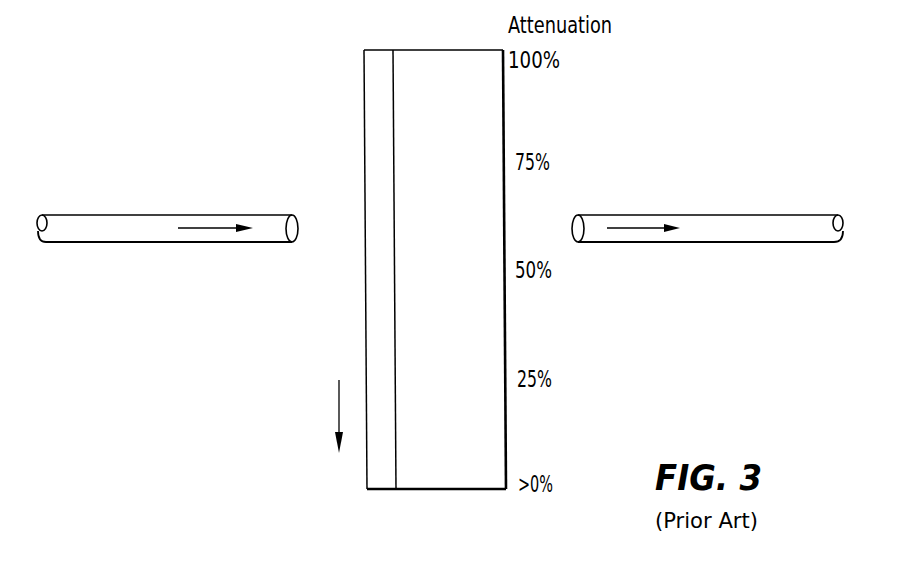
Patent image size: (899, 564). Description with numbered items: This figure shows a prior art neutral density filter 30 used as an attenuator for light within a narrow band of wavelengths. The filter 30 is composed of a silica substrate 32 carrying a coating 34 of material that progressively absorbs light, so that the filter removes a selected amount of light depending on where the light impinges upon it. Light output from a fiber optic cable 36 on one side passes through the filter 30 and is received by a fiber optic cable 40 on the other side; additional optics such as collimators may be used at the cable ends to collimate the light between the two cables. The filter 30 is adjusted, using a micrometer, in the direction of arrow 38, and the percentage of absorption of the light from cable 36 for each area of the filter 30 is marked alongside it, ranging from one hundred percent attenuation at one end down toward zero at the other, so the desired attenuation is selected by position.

The neutral density filter 30 is at (308, 61).
The silica substrate 32 is at (438, 55).
The coating 34 is at (372, 125).
The fiber optic cable 36 is at (172, 244).
The arrow 38 is at (339, 402).
The fiber optic cable 40 is at (717, 244).